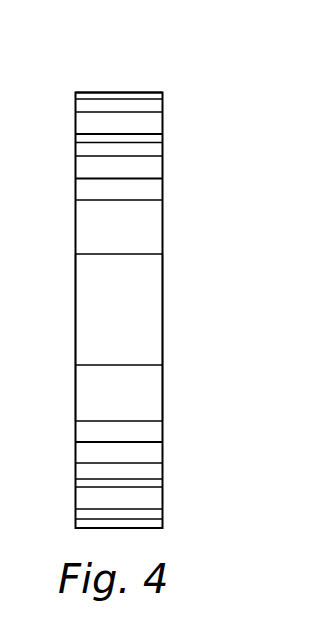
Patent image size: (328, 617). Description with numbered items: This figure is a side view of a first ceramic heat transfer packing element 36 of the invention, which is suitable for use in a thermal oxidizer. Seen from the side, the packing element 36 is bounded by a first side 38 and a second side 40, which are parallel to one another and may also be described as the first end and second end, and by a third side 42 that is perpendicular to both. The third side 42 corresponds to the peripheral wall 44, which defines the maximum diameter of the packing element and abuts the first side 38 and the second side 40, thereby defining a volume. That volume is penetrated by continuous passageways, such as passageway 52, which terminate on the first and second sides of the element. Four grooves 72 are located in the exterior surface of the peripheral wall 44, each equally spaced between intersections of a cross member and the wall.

The heat transfer packing element 36 is at (48, 113).
The third side 42 is at (118, 87).
The grooves 72 is at (123, 177).
The peripheral wall 44 is at (148, 290).
The continuous passageway 52 is at (38, 305).
The second side 40 is at (68, 390).
The first side 38 is at (172, 389).